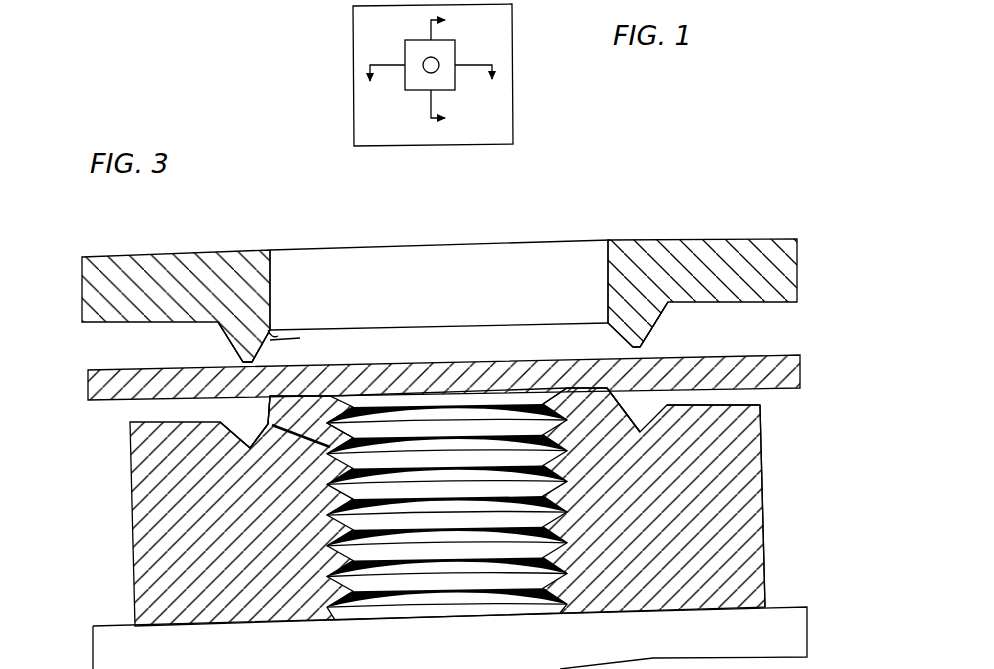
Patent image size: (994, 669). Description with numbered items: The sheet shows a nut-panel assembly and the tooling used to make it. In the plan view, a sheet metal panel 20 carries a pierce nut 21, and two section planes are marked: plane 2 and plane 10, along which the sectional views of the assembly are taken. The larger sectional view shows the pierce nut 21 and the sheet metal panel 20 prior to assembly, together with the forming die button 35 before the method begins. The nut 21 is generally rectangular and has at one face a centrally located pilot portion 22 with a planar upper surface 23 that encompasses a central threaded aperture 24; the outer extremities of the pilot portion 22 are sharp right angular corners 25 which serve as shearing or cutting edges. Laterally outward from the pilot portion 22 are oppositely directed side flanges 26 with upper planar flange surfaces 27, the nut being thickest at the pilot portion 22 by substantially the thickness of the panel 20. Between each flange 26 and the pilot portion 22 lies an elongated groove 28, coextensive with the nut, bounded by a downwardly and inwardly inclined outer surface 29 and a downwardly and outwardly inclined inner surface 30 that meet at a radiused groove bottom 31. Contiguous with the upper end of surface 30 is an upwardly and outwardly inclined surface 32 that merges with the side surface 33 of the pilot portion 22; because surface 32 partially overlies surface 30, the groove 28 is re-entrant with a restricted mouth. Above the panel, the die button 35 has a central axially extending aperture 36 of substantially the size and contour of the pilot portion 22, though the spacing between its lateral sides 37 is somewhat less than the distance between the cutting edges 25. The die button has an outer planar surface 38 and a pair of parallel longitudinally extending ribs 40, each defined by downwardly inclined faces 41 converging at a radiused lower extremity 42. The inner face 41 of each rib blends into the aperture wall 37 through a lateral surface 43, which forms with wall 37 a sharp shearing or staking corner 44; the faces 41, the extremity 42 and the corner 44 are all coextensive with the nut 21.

In FIG. 1, the sectional plane 2— 2 is at (449, 69).
In FIG. 1, the viewing plane 10— 10 is at (430, 86).
In FIG. 1, the sheet metal panel 20 is at (502, 128).
In FIG. 3, the sheet metal panel 20 is at (752, 358).
In FIG. 1, the pierce nut 21 is at (458, 55).
In FIG. 3, the pierce nut 21 is at (128, 536).
In FIG. 3, the pilot portion 22 is at (612, 393).
In FIG. 3, the planar upper surface 23 is at (578, 388).
In FIG. 3, the threaded aperture 24 is at (505, 440).
In FIG. 3, the right angular corners 25 is at (650, 356).
In FIG. 3, the side flanges 26 is at (742, 485).
In FIG. 3, the flange surfaces 27 is at (724, 398).
In FIG. 3, the groove 28 is at (266, 441).
In FIG. 3, the outer inclined surface 29 is at (232, 432).
In FIG. 3, the inner inclined surface 30 is at (338, 444).
In FIG. 3, the radiused groove bottom 31 is at (250, 445).
In FIG. 3, the upwardly and outwardly inclined surface 32 is at (272, 418).
In FIG. 3, the side surface of pilot portion 33 is at (268, 418).
In FIG. 3, the forming die button 35 is at (716, 236).
In FIG. 3, the central aperture 36 is at (480, 258).
In FIG. 3, the lateral sides of aperture 37 is at (274, 258).
In FIG. 3, the outer planar surface 38 is at (120, 318).
In FIG. 3, the ribs 40 is at (250, 340).
In FIG. 3, the inclined faces 41 is at (352, 332).
In FIG. 3, the radiused lower extremity 42 is at (270, 345).
In FIG. 3, the lateral surface 43 is at (290, 335).
In FIG. 3, the shearing corner 44 is at (275, 337).